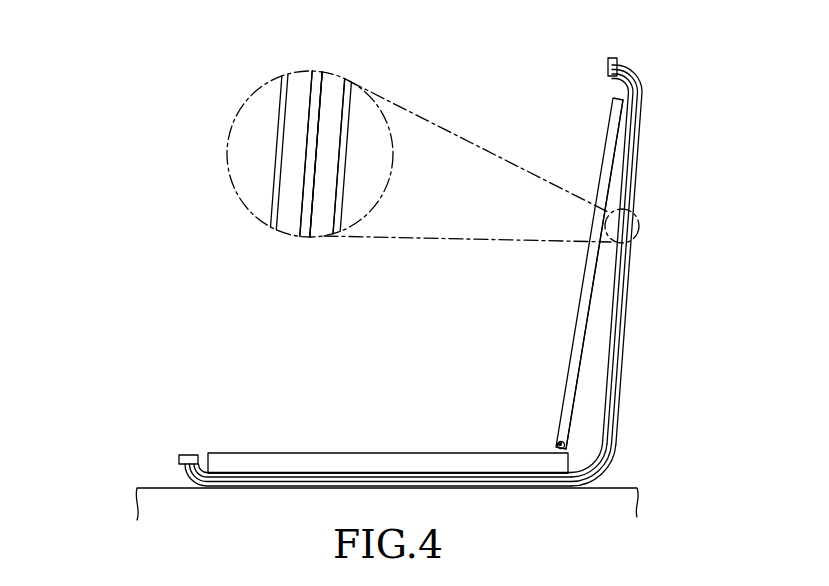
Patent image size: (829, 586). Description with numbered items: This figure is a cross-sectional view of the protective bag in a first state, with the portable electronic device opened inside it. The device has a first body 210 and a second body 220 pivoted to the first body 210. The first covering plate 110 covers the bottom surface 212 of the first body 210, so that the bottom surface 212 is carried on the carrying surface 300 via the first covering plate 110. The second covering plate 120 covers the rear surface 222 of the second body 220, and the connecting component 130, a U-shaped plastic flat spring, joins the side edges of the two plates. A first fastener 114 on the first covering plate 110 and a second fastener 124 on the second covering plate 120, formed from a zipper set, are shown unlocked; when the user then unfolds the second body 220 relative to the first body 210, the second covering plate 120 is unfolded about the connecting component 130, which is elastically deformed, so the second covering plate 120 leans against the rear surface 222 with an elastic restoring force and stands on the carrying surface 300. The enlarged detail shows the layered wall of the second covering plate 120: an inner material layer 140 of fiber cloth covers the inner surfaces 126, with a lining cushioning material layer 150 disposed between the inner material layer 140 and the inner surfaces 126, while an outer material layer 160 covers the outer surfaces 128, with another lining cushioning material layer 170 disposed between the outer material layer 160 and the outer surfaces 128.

The first covering plate 110 is at (207, 487).
The first fastener 114 is at (178, 460).
The second covering plate 120 is at (633, 271).
The second fastener 124 is at (608, 66).
The inner surfaces 126 is at (296, 155).
The outer surfaces 128 is at (324, 155).
The connecting component 130 is at (591, 467).
The inner material layer 140 is at (270, 228).
The lining cushioning material layer 150 is at (285, 223).
The outer material layer 160 is at (347, 83).
The lining cushioning material layer 170 is at (335, 83).
The first body 210 is at (387, 453).
The bottom surface 212 is at (507, 482).
The second body 220 is at (584, 273).
The rear surface 222 is at (595, 320).
The carrying surface 300 is at (626, 484).